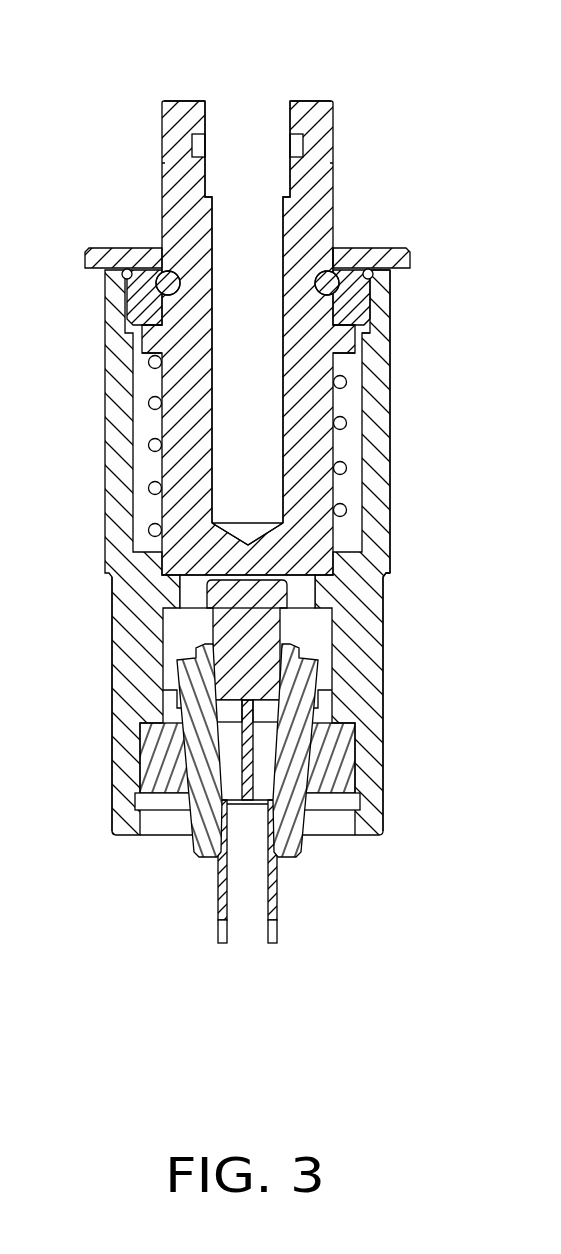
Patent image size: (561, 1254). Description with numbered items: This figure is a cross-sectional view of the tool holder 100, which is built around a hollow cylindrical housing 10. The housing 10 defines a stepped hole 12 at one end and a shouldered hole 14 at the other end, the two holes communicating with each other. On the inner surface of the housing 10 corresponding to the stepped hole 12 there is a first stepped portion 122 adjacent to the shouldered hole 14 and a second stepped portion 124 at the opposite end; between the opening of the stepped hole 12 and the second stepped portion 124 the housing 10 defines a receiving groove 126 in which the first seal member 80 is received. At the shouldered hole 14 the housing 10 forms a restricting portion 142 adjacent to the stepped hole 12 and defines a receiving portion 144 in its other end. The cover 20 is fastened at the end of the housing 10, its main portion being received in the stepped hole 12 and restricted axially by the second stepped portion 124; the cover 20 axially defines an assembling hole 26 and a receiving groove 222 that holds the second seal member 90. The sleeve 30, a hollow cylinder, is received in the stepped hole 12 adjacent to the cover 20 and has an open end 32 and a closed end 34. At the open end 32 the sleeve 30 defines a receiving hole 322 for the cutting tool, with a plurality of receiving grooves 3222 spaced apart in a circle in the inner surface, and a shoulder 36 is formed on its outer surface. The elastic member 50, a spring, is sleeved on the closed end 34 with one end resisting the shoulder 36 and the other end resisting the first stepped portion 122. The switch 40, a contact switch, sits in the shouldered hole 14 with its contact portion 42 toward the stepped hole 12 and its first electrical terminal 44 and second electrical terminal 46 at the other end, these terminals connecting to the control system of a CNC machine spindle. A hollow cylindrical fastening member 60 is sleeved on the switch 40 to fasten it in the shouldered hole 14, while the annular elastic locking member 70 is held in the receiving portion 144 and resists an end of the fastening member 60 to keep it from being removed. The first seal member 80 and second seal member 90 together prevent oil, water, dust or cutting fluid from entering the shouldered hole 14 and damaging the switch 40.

The tool holder 100 is at (377, 58).
The housing 10 is at (372, 466).
The stepped hole 12 is at (372, 418).
The first stepped portion 122 is at (380, 545).
The second stepped portion 124 is at (368, 325).
The receiving groove 126 is at (400, 248).
The shouldered hole 14 is at (172, 820).
The restricting portion 142 is at (350, 712).
The receiving portion 144 is at (350, 823).
The cover 20 is at (223, 252).
The receiving groove 222 is at (140, 303).
The assembling hole 26 is at (333, 250).
The sleeve 30 is at (245, 311).
The open end 32 is at (182, 112).
The receiving hole 322 is at (238, 108).
The receiving grooves 3222 is at (198, 145).
The closed end 34 is at (200, 550).
The shoulder 36 is at (352, 348).
The switch 40 is at (302, 769).
The contact portion 42 is at (277, 592).
The first electrical terminal 44 is at (222, 940).
The second electrical terminal 46 is at (278, 938).
The elastic member 50 is at (348, 380).
The fastening member 60 is at (338, 762).
The locking member 70 is at (343, 800).
The first seal member 80 is at (370, 273).
The second seal member 90 is at (170, 265).